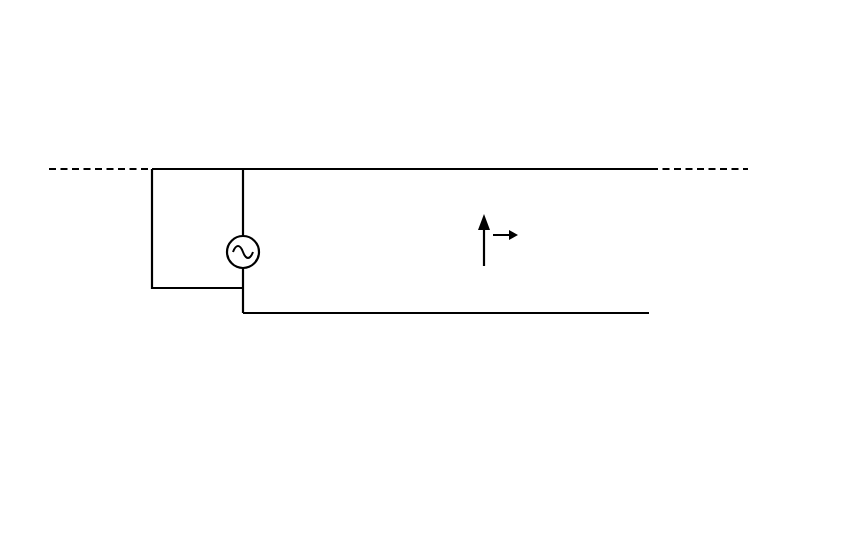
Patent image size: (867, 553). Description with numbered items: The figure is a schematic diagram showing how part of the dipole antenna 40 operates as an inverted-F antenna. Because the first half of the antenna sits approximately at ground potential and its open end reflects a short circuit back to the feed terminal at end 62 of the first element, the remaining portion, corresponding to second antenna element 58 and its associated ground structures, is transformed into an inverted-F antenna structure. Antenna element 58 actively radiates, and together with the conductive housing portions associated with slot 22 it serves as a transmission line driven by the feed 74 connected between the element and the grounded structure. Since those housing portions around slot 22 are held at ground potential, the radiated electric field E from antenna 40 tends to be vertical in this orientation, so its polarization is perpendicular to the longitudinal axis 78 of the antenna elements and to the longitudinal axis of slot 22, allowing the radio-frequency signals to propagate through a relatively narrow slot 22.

The dipole antenna 40 is at (468, 50).
The longitudinal axis 78 is at (102, 169).
The second antenna element 58 is at (330, 169).
The slot 22 is at (452, 313).
The end of first antenna element 62 is at (153, 198).
The feed 74 is at (243, 205).